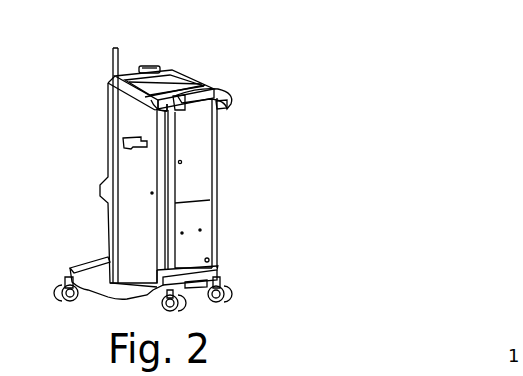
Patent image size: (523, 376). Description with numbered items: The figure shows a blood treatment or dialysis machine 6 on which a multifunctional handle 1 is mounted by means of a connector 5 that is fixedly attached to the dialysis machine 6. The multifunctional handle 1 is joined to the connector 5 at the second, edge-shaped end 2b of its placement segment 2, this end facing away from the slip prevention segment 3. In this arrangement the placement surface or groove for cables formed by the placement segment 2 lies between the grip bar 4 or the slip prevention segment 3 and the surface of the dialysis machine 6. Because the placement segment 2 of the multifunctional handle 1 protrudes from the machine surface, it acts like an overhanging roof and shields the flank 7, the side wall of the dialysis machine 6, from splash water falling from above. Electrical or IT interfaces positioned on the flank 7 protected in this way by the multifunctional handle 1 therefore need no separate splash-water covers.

The multifunctional handle 1 is at (233, 94).
The placement segment 2 is at (183, 118).
The second end 2b is at (183, 108).
The slip prevention segment 3 is at (229, 104).
The grip bar 4 is at (222, 110).
The connector 5 is at (208, 88).
The dialysis machine 6 is at (182, 77).
The flank 7 is at (193, 168).